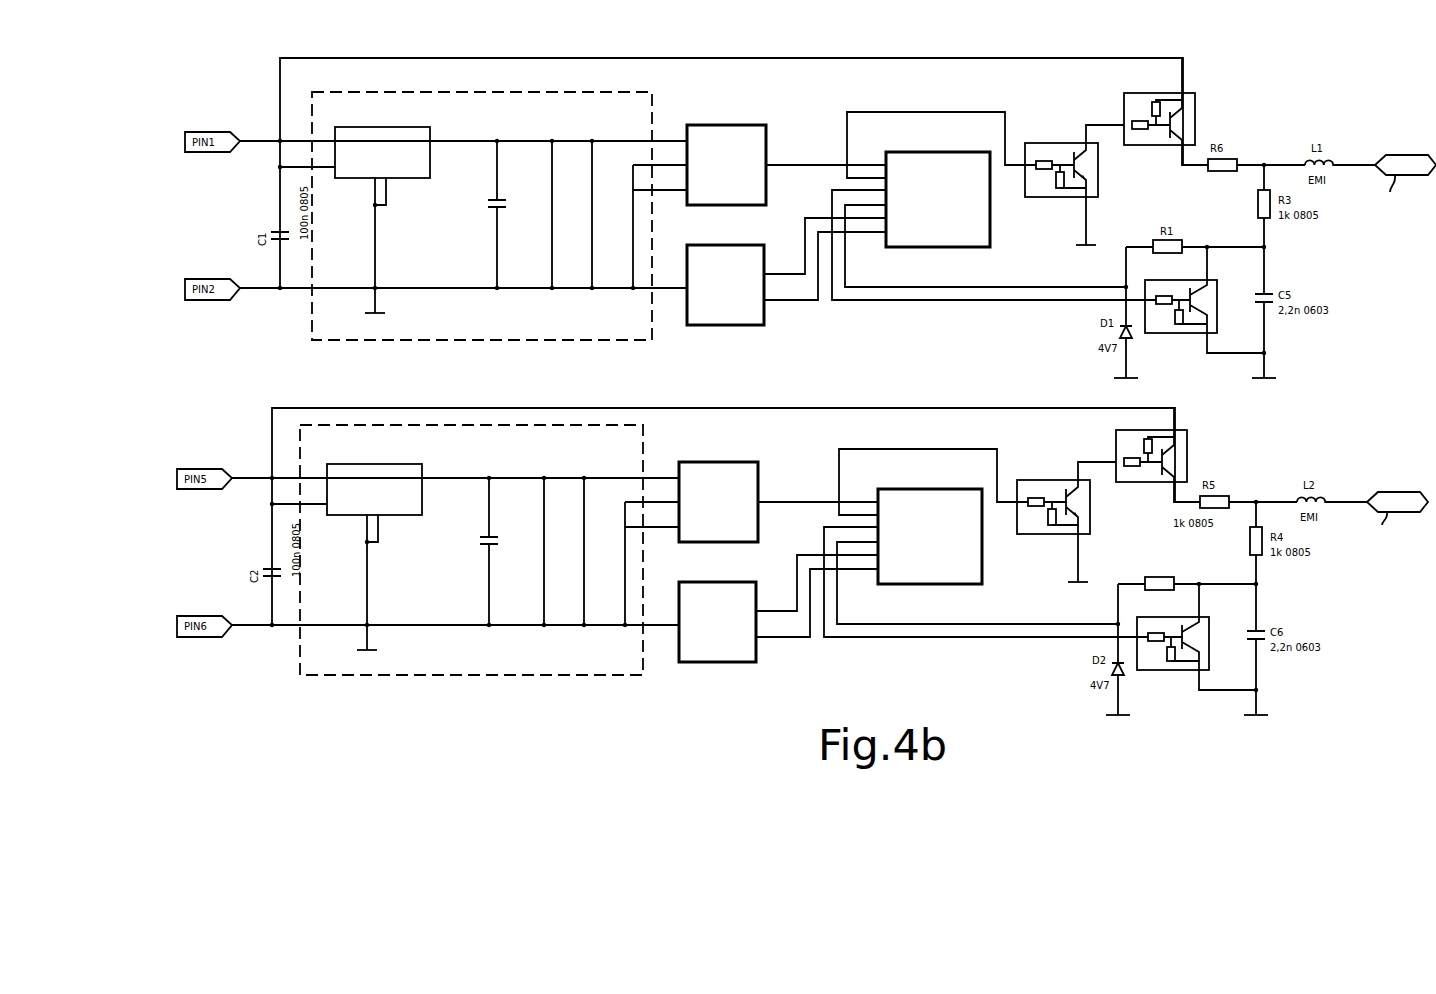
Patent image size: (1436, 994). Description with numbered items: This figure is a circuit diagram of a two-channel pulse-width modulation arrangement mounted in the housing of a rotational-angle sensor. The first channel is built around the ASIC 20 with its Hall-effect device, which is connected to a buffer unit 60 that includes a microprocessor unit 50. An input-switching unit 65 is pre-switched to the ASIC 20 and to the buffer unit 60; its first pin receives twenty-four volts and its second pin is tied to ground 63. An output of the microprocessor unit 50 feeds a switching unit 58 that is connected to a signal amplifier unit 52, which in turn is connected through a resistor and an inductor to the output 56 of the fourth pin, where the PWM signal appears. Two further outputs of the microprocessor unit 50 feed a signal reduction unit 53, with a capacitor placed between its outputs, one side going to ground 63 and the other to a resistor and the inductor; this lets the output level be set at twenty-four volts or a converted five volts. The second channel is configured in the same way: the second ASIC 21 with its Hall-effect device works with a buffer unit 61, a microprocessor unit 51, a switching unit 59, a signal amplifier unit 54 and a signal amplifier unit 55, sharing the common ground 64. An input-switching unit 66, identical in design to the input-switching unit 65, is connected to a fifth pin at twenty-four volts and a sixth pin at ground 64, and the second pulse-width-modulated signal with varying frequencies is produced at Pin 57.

The ASIC 20 is at (736, 150).
The second ASIC 21 is at (750, 513).
The microprocessor unit 50 is at (954, 206).
The microprocessor unit 51 is at (946, 543).
The signal amplifier unit 52 is at (1188, 105).
The signal reduction unit 53 is at (1165, 315).
The signal amplifier unit 54 is at (1182, 455).
The signal amplifier unit 55 is at (1173, 663).
The output 56 is at (1395, 155).
The Pin 57 is at (1394, 495).
The switching unit 58 is at (1055, 145).
The switching unit 59 is at (1062, 522).
The buffer unit 60 is at (740, 319).
The buffer unit 61 is at (718, 645).
The ground 63 is at (206, 279).
The ground 64 is at (757, 651).
The input-switching unit 65 is at (533, 92).
The input-switching unit 66 is at (471, 572).